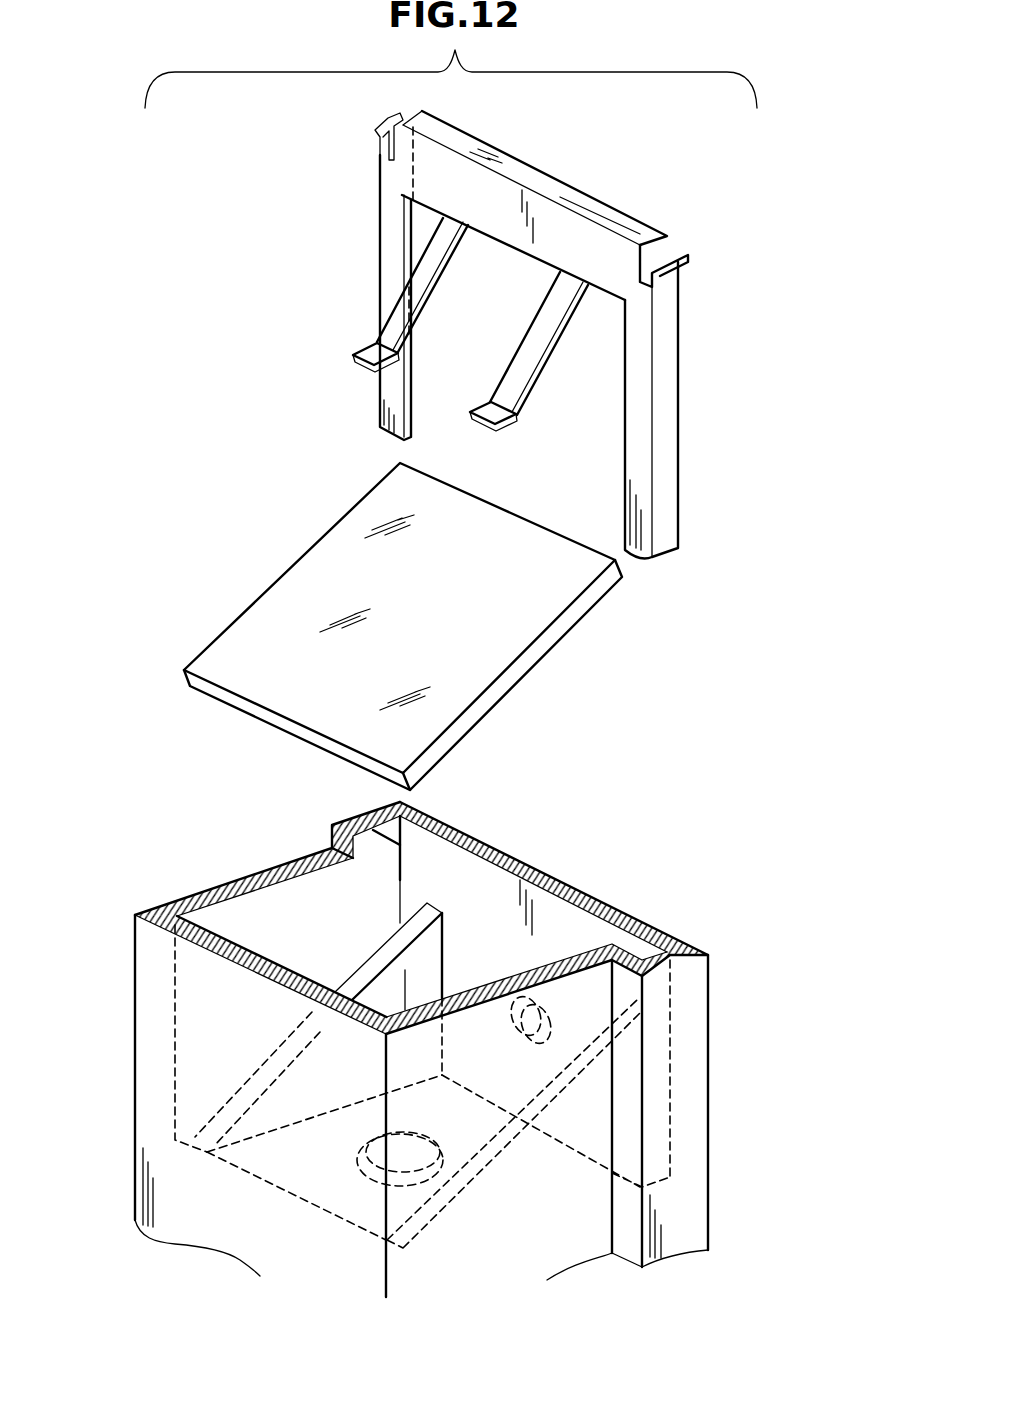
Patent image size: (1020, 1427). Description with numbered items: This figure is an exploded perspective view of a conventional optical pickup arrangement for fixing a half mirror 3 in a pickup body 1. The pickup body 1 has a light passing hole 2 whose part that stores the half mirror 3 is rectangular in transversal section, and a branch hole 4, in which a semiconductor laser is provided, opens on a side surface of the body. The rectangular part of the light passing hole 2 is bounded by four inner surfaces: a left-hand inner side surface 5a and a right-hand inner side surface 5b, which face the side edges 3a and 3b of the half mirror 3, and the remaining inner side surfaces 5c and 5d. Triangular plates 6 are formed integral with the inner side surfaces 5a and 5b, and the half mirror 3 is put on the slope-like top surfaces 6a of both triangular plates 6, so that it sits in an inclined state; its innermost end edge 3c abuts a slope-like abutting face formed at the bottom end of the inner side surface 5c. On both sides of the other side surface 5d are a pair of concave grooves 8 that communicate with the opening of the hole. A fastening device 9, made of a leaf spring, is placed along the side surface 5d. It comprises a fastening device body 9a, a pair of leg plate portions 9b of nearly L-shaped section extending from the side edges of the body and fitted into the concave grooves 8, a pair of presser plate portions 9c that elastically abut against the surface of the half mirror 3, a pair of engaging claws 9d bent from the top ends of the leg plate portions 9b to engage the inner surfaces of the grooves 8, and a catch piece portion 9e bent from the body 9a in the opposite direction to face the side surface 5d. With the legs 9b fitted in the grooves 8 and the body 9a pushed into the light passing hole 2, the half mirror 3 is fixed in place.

The pickup body 1 is at (154, 906).
The light passing hole 2 is at (480, 884).
The half mirror 3 is at (340, 508).
The side edge 3a is at (300, 555).
The side edge 3b is at (527, 664).
The innermost end edge 3c is at (287, 730).
The branch hole 4 is at (548, 1017).
The left-hand inner side surface 5a is at (233, 918).
The right-hand inner side surface 5b is at (455, 987).
The inner side surface 5c is at (273, 955).
The inner side surface 5d is at (545, 905).
The triangular plate 6 is at (427, 972).
The slope-like top surface 6a is at (367, 968).
The concave groove 8 is at (407, 843).
The fastening device 9 is at (542, 169).
The fastening device body 9a is at (513, 230).
The leg plate portion 9b is at (385, 285).
The presser plate portion 9c is at (522, 358).
The engaging claw 9d is at (377, 128).
The catch piece portion 9e is at (600, 212).